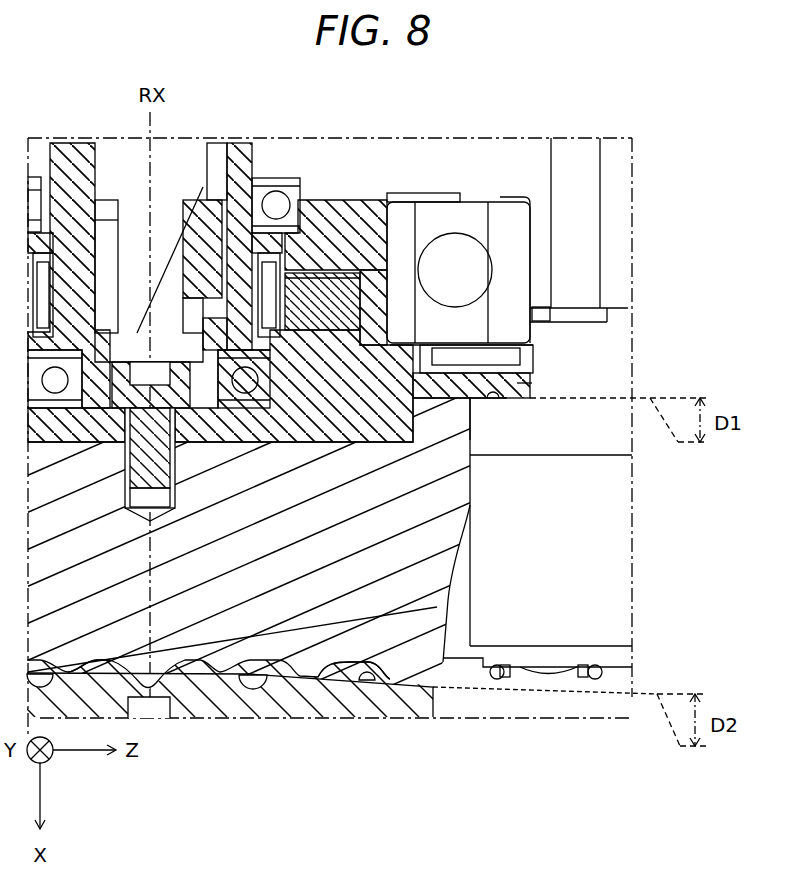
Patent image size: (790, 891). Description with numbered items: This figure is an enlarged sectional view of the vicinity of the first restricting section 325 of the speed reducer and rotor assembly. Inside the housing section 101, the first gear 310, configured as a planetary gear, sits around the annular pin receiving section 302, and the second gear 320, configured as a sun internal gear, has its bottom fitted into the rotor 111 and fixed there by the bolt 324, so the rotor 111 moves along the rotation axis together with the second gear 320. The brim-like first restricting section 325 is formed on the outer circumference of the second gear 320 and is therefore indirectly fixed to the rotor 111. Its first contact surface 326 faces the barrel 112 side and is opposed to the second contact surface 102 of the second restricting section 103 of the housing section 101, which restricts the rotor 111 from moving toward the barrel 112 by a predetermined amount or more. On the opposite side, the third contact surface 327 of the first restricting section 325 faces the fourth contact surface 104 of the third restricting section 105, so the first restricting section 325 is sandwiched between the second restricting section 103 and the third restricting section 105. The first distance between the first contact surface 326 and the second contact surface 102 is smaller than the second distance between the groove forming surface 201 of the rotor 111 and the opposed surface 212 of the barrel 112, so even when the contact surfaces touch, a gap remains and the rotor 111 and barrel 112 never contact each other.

The housing section 101 is at (618, 337).
The second contact surface 102 is at (495, 398).
The second restricting section 103 is at (480, 422).
The fourth contact surface 104 is at (515, 365).
The third restricting section 105 is at (487, 357).
The rotor 111 is at (437, 607).
The barrel 112 is at (192, 700).
The groove forming surface 201 is at (317, 683).
The opposed surface 212 is at (373, 683).
The pin receiving section 302 is at (328, 222).
The first gear 310 is at (328, 287).
The second gear 320 is at (393, 287).
The bolt 324 is at (176, 458).
The first restricting section 325 is at (533, 387).
The first contact surface 326 is at (507, 398).
The third contact surface 327 is at (520, 373).